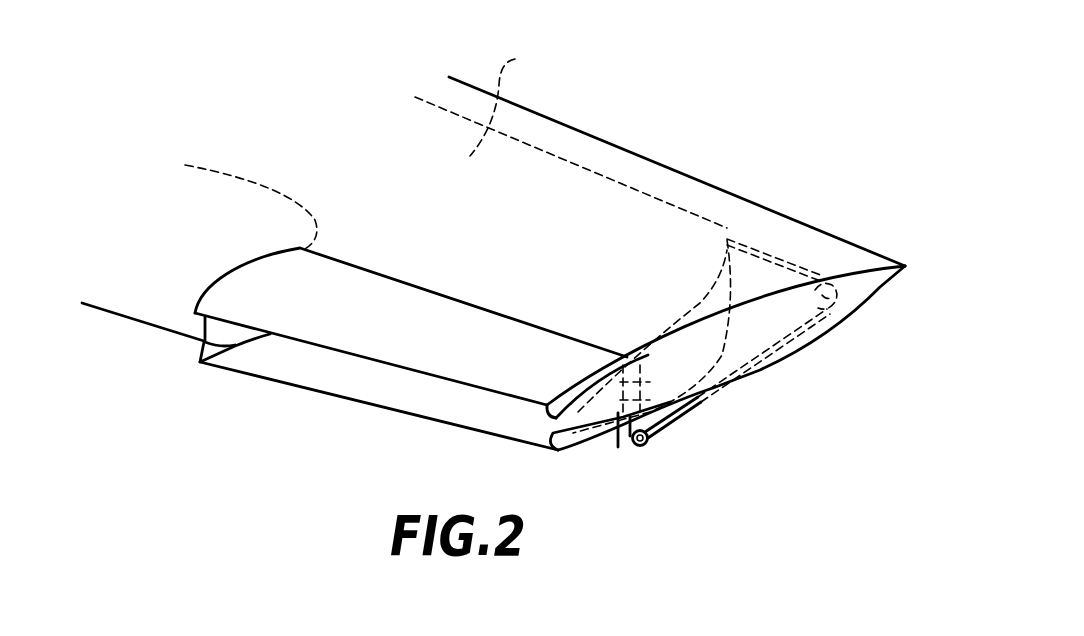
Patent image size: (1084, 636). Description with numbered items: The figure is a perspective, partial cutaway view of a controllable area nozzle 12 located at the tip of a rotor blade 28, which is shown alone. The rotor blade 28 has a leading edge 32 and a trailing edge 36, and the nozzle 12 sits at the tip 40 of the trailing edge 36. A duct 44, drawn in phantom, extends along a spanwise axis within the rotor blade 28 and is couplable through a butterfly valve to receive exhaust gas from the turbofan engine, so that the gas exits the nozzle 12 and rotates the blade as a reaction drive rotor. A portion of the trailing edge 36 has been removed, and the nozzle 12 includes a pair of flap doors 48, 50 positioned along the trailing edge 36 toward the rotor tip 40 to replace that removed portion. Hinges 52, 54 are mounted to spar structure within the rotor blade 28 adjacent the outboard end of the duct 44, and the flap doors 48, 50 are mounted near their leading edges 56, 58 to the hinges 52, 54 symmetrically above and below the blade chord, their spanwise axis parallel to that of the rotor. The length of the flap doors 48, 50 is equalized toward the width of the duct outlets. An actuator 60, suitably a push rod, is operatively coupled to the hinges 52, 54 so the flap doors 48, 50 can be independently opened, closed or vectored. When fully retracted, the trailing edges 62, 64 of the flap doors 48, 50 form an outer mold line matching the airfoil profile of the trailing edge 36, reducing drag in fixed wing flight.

The controllable area nozzle 12 is at (394, 450).
The rotor blade 28 is at (778, 86).
The leading edge 32 is at (628, 152).
The trailing edge 36 is at (150, 324).
The tip 40 is at (818, 419).
The duct 44 is at (515, 59).
The flap door 48 is at (404, 341).
The flap door 50 is at (342, 371).
The hinge 52 is at (658, 375).
The hinge 54 is at (682, 413).
The leading edge 56 is at (560, 336).
The leading edge 58 is at (618, 447).
The actuator 60 is at (807, 328).
The trailing edge 62 is at (300, 343).
The trailing edge 64 is at (227, 370).